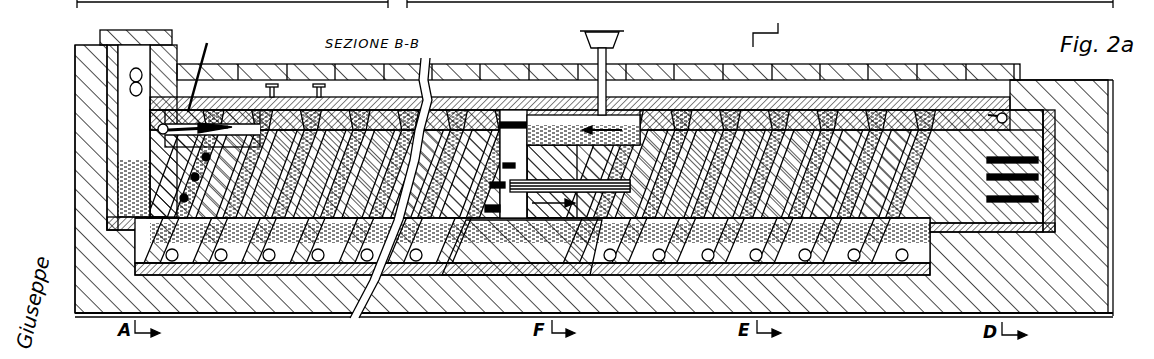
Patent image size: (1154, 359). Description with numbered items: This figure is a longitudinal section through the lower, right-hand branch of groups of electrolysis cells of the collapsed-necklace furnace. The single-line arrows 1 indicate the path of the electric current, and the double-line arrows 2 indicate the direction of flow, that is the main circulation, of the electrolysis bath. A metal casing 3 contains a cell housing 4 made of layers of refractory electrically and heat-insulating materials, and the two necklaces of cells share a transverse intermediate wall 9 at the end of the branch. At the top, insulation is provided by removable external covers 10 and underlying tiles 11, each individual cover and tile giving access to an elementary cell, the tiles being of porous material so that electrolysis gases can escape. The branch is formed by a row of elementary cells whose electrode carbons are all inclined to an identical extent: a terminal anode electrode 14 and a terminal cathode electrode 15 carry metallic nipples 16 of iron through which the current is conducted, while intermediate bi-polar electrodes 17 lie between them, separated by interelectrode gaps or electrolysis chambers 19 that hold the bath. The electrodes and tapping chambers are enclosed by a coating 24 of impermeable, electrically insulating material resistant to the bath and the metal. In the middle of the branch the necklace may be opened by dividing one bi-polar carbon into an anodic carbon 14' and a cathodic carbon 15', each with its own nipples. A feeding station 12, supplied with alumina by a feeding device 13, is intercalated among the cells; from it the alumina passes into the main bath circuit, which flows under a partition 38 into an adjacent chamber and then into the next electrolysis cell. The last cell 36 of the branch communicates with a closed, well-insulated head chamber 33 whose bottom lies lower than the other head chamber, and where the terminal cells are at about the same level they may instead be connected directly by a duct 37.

The single-line arrows 1 is at (573, 1).
The double-line arrows 2 is at (608, 133).
The metal casing 3 is at (1108, 225).
The cell housing 4 is at (282, 1).
The transverse intermediate wall 9 is at (77, 88).
The external covers 10 is at (893, 75).
The tiles 11 is at (835, 108).
The feeding station 12 is at (630, 140).
The feeding device 13 is at (600, 32).
The terminal electrode (anode) 14 is at (99, 187).
The anodic carbon 14' is at (785, 128).
The terminal electrode (cathode) 15 is at (1035, 171).
The cathodic carbon 15' is at (513, 127).
The metallic nipples 16 is at (197, 177).
The intermediate bi-polar electrodes 17 is at (263, 147).
The interelectrode gaps or electrolysis chambers 19 is at (437, 153).
The coating 24 is at (583, 275).
The chamber 33 is at (137, 137).
The last cell 36 is at (252, 108).
The duct 37 is at (997, 112).
The partition 38 is at (547, 130).